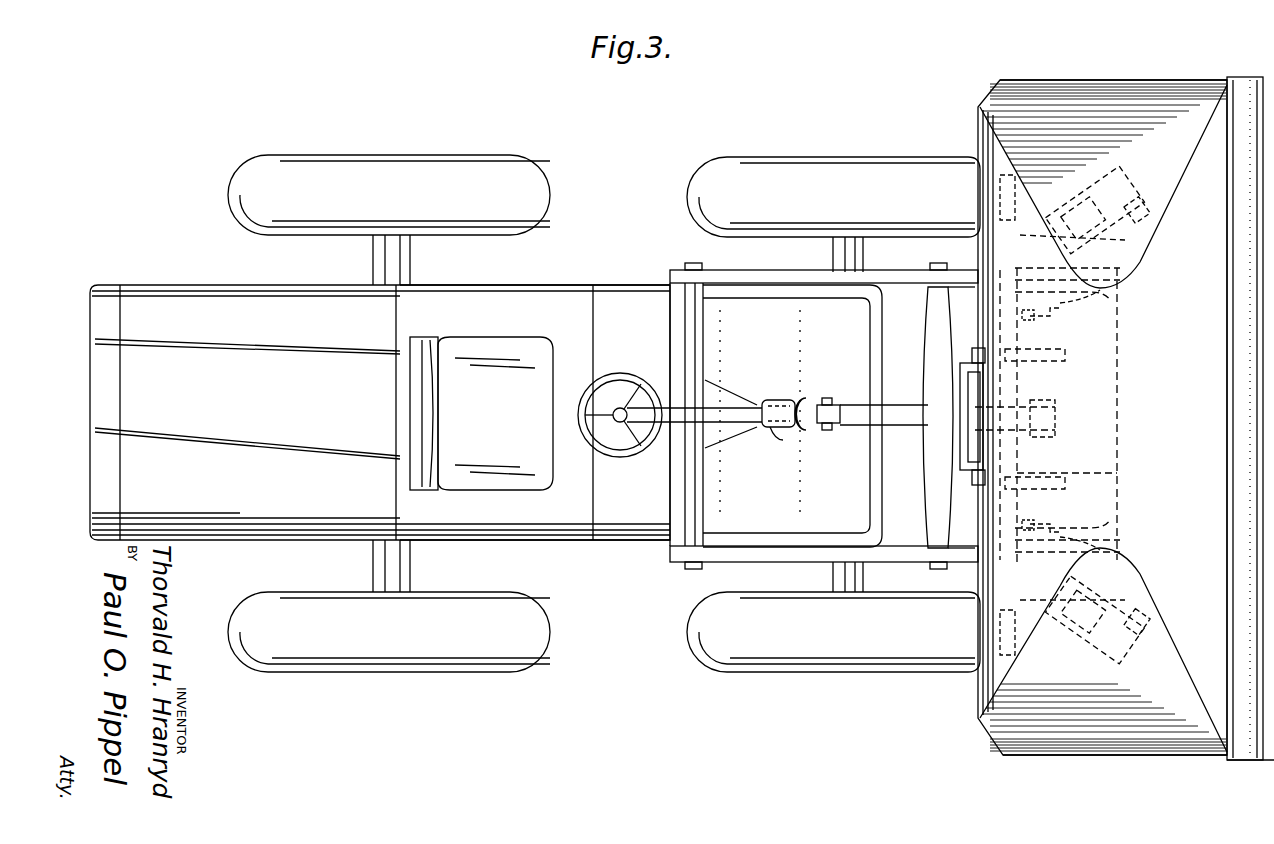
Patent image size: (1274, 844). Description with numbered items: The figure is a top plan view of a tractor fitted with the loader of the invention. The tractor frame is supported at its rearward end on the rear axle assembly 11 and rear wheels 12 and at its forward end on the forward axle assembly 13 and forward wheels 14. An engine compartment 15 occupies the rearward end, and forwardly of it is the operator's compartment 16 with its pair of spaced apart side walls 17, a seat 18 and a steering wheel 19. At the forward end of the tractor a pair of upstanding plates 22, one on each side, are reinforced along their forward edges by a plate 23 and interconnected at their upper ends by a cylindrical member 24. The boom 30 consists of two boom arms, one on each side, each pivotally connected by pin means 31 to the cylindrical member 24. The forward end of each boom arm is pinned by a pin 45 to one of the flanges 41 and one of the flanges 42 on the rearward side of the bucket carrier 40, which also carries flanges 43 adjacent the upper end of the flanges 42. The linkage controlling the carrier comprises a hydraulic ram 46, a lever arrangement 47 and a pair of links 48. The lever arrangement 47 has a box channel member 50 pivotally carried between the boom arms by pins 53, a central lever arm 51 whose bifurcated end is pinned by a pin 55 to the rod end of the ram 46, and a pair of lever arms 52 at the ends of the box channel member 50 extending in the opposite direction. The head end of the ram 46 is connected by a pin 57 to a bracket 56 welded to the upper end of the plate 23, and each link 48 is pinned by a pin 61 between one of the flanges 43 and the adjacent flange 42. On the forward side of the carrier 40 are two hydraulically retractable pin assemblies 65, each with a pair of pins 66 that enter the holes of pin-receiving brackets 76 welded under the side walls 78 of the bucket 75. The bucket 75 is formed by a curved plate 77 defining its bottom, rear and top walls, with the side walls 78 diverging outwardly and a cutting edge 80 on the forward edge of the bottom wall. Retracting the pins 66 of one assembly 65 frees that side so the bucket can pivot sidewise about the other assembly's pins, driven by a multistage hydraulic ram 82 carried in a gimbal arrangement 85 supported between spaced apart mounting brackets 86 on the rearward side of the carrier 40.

The rear axle assembly 11 is at (373, 568).
The rear wheels 12 is at (341, 165).
The forward axle assembly 13 is at (838, 575).
The forward wheels 14 is at (782, 165).
The engine compartment 15 is at (220, 396).
The operator's compartment 16 is at (488, 306).
The side walls 17 is at (567, 285).
The seat 18 is at (472, 426).
The steering wheel 19 is at (620, 373).
The upstanding plates 22 is at (729, 533).
The plate 23 is at (843, 343).
The cylindrical member 24 is at (672, 495).
The boom 30 is at (906, 285).
The pin means 31 is at (688, 263).
The bucket carrier 40 is at (1119, 474).
The flanges 41 is at (1132, 270).
The flanges 42 is at (1120, 296).
The flanges 43 is at (1058, 314).
The pin 45 is at (1115, 317).
The hydraulic ram 46 is at (786, 400).
The lever arrangement 47 is at (905, 432).
The links 48 is at (1085, 306).
The box channel member 50 is at (926, 388).
The lever arm 51 is at (857, 404).
The lever arms 52 is at (966, 300).
The pins 53 is at (935, 263).
The pin 55 is at (824, 431).
The bracket 56 is at (728, 440).
The pin 57 is at (776, 430).
The pin 61 is at (1030, 320).
The hydraulically retractable pin assemblies 65 is at (1125, 240).
The pins 66 is at (1000, 223).
The bucket 75 is at (1131, 80).
The pin-receiving brackets 76 is at (1108, 194).
The curved plate 77 is at (1143, 403).
The side walls 78 is at (1064, 80).
The cutting edge 80 is at (1262, 77).
The multistage hydraulic ram 82 is at (975, 421).
The gimbal arrangement 85 is at (960, 386).
The mounting brackets 86 is at (1060, 362).